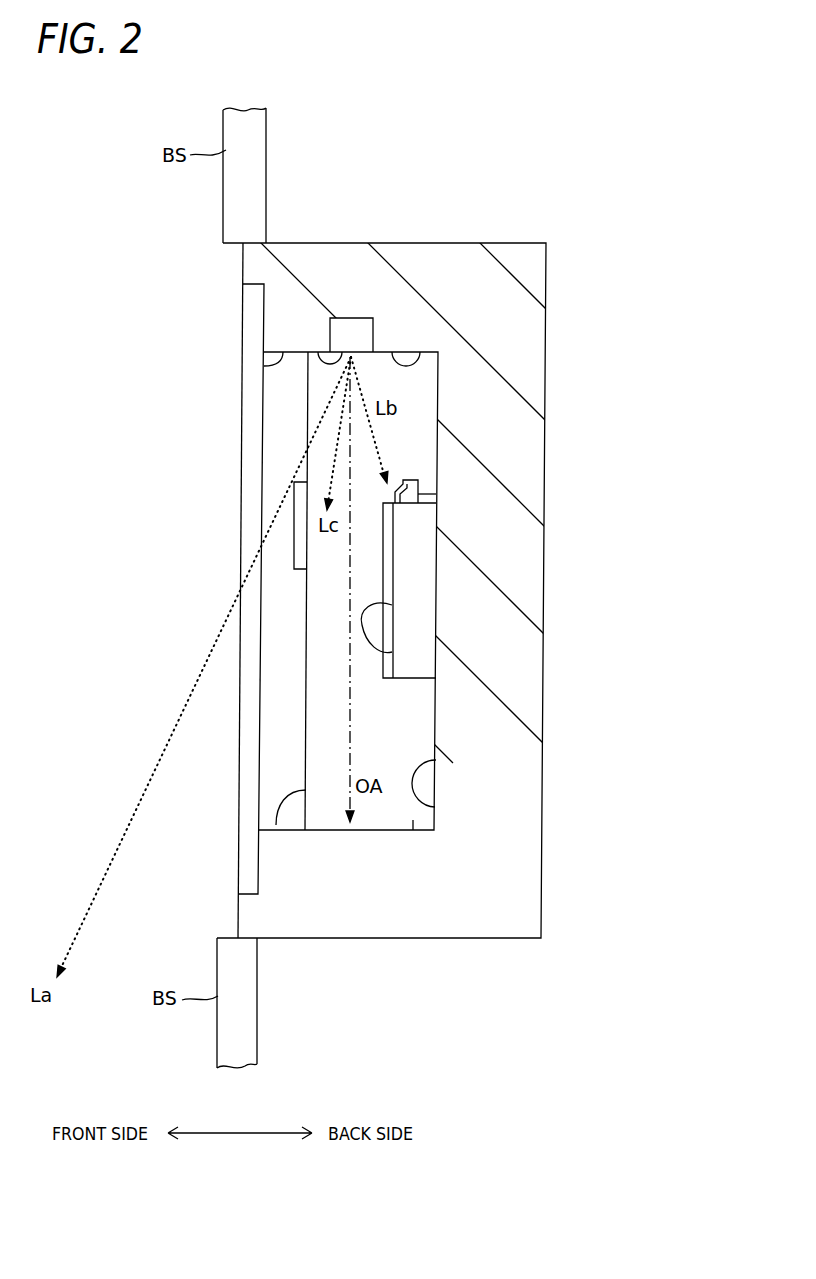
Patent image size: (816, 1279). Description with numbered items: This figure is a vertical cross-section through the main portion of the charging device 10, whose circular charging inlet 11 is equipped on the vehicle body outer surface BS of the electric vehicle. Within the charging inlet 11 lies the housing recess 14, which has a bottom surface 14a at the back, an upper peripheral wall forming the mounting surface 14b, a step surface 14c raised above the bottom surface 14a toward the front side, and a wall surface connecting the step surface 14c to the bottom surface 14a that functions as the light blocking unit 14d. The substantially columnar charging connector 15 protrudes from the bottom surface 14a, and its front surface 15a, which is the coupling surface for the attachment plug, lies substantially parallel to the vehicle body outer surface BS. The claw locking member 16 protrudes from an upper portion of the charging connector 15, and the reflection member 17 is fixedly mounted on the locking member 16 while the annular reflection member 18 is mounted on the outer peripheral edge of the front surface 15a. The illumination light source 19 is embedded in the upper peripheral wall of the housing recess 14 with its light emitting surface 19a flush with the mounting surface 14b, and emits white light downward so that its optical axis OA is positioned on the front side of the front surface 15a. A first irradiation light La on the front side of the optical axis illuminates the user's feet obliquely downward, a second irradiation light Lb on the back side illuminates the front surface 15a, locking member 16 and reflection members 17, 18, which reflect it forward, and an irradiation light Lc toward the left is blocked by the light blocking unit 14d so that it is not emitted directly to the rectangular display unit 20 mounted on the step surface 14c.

The charging device 10 is at (660, 96).
The charging inlet 11 is at (247, 262).
The housing recess 14 is at (264, 366).
The bottom surface 14a is at (435, 807).
The mounting surface 14b is at (421, 359).
The step surface 14c is at (276, 825).
The light blocking unit 14d is at (413, 820).
The charging connector 15 is at (430, 583).
The front surface 15a is at (392, 652).
The locking member 16 is at (418, 494).
The reflection member 17 is at (398, 484).
The reflection member 18 is at (383, 680).
The illumination light source 19 is at (350, 318).
The light emitting surface 19a is at (328, 361).
The display unit 20 is at (294, 552).